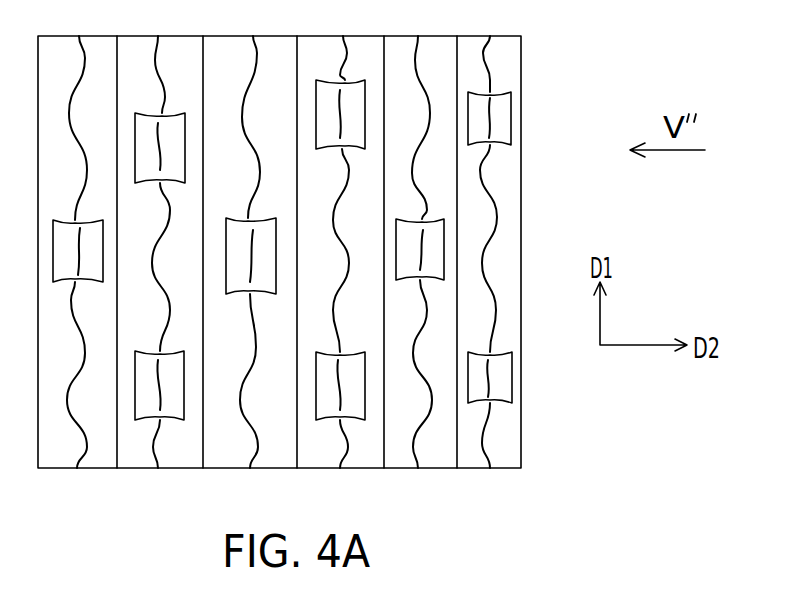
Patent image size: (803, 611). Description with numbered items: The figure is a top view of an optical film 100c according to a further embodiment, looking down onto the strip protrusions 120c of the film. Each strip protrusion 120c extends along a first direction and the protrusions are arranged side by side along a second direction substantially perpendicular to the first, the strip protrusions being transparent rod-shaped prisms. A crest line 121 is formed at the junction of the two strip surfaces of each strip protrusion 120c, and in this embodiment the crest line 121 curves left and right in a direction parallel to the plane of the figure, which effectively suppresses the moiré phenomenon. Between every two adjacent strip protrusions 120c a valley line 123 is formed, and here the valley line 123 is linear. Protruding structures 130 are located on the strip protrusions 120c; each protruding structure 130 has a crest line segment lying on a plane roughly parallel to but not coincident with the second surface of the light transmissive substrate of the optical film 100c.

The optical film 100c is at (614, 517).
The strip protrusion 120c is at (331, 242).
The crest line 121 is at (488, 80).
The valley line 123 is at (458, 200).
The protruding structure 130 is at (500, 118).